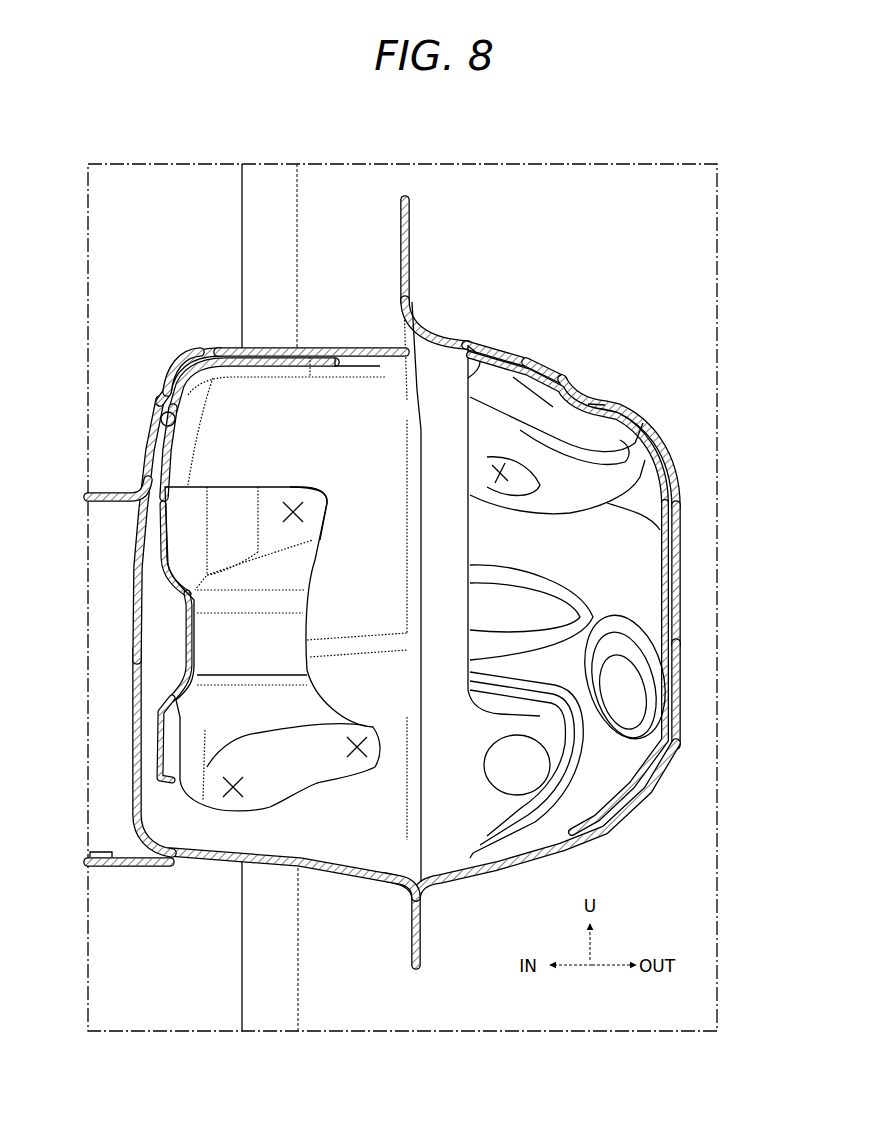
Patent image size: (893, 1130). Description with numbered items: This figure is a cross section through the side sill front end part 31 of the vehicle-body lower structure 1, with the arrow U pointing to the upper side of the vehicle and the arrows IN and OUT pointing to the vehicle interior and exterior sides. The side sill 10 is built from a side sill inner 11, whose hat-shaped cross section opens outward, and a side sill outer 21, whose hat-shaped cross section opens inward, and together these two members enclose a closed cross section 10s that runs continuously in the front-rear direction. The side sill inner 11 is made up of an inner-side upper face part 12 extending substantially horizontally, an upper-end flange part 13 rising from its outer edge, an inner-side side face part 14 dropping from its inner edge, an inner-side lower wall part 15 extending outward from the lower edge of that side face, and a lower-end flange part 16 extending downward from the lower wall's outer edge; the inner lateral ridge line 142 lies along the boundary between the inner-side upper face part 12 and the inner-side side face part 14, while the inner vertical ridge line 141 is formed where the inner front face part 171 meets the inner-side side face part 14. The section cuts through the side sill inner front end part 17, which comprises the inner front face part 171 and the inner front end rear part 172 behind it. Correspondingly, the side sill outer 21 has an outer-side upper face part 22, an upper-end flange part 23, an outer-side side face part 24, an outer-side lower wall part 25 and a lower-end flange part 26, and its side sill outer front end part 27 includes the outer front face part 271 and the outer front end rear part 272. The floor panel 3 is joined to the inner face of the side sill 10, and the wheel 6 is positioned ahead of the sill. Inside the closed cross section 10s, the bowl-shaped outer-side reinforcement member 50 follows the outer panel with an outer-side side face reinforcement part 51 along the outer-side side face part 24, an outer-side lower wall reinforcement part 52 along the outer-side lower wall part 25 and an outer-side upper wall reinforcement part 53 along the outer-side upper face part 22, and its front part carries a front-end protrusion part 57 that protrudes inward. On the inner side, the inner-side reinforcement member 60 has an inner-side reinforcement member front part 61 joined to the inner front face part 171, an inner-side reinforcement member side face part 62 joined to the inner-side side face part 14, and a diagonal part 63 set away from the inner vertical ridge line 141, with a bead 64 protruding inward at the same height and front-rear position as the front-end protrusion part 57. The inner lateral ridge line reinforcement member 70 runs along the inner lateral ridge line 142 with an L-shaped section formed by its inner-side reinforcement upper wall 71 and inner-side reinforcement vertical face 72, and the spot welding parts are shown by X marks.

The vehicle-body lower structure 1 is at (556, 238).
The floor panel 3 is at (100, 490).
The wheel 6 is at (242, 192).
The side sill 10 is at (603, 274).
The closed cross section 10s is at (380, 465).
The side sill inner 11 is at (184, 338).
The inner-side upper face part 12 is at (316, 340).
The upper-end flange part 13 is at (399, 222).
The inner-side side face part 14 is at (131, 705).
The inner vertical ridge line 141 is at (205, 356).
The inner lateral ridge line 142 is at (152, 383).
The inner-side lower wall part 15 is at (338, 878).
The lower-end flange part 16 is at (411, 940).
The side sill inner front end part 17 is at (276, 343).
The inner front face part 171 is at (374, 372).
The inner front end rear part 172 is at (132, 610).
The side sill outer 21 is at (522, 318).
The outer-side upper face part 22 is at (545, 357).
The upper-end flange part 23 is at (416, 252).
The outer-side side face part 24 is at (682, 583).
The outer-side lower wall part 25 is at (503, 856).
The lower-end flange part 26 is at (422, 935).
The side sill outer front end part 27 is at (612, 365).
The outer front face part 271 is at (455, 352).
The outer front end rear part 272 is at (682, 653).
The side sill front end part 31 is at (471, 347).
The outer-side reinforcement member 50 is at (634, 424).
The outer-side side face reinforcement part 51 is at (660, 568).
The outer-side lower wall reinforcement part 52 is at (490, 832).
The outer-side upper wall reinforcement part 53 is at (468, 370).
The front-end protrusion part 57 is at (476, 584).
The inner-side reinforcement member 60 is at (245, 487).
The inner-side reinforcement member front part 61 is at (330, 508).
The inner-side reinforcement member side face part 62 is at (152, 750).
The diagonal part 63 is at (215, 478).
The bead 64 is at (191, 640).
The inner lateral ridge line reinforcement member 70 is at (278, 370).
The inner-side reinforcement upper wall 71 is at (310, 372).
The inner-side reinforcement vertical face 72 is at (147, 432).